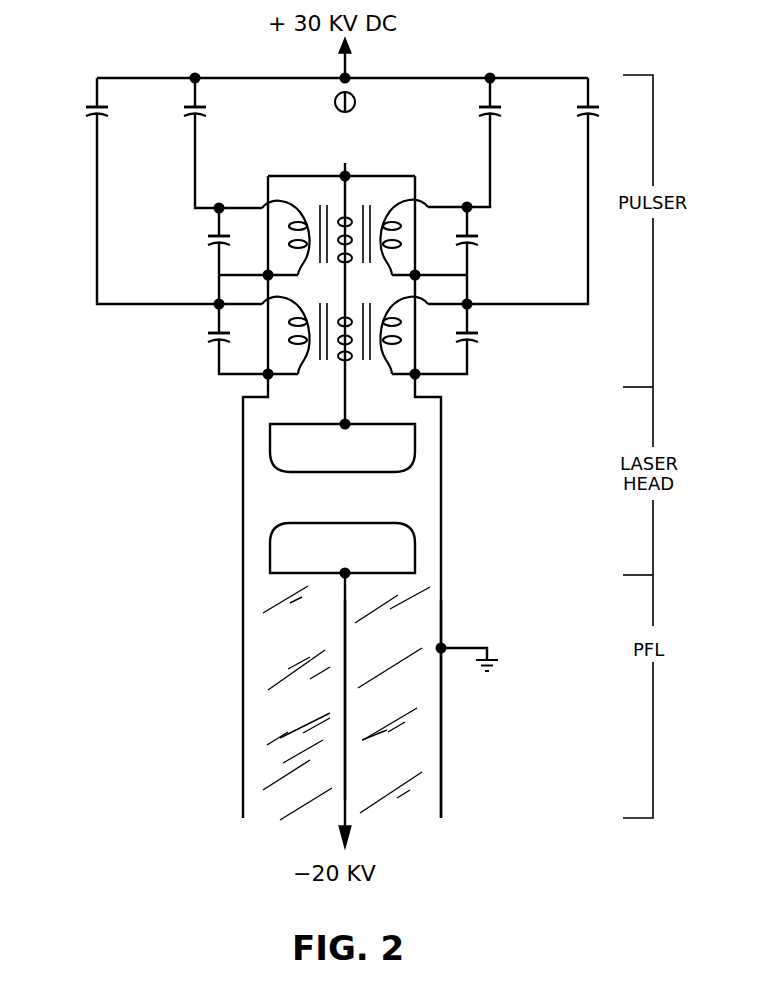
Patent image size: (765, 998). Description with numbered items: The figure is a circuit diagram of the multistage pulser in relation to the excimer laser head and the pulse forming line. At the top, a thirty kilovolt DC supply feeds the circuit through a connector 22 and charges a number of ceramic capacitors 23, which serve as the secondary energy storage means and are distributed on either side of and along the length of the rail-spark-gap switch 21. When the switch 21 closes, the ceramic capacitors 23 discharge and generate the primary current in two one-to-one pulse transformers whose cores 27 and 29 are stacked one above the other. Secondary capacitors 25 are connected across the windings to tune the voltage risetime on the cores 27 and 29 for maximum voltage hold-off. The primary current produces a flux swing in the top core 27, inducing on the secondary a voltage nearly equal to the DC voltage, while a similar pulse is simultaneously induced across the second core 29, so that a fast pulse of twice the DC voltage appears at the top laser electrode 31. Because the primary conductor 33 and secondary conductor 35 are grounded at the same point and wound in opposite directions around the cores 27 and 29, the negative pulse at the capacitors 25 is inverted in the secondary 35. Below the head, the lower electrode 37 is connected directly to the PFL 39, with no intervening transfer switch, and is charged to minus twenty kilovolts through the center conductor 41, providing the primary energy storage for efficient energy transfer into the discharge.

The rail-spark-gap switch 21 is at (355, 104).
The connector 22 is at (354, 46).
The ceramic capacitors 23 is at (195, 120).
The secondary capacitors 25 is at (213, 245).
The top transformer core 27 is at (366, 212).
The second transformer core 29 is at (366, 362).
The top laser electrode 31 is at (415, 446).
The primary conductor 33 is at (405, 205).
The secondary conductor 35 is at (338, 212).
The lower electrode 37 is at (415, 540).
The PFL 39 is at (417, 710).
The center conductor 41 is at (345, 787).